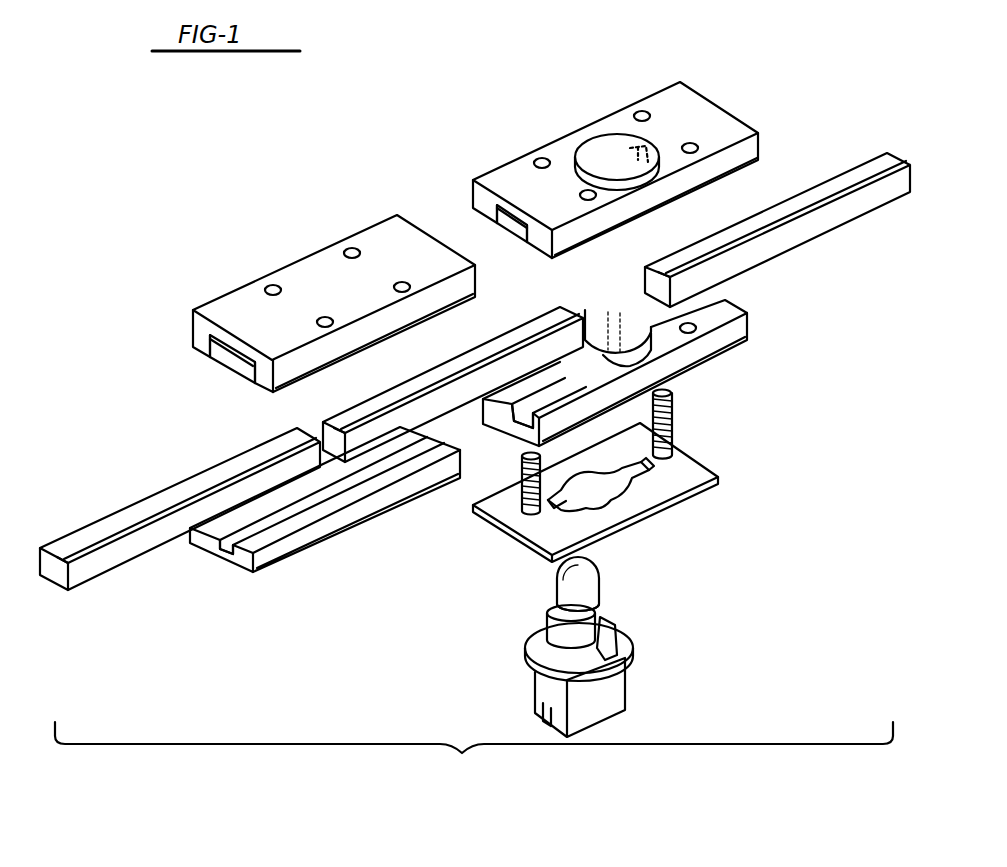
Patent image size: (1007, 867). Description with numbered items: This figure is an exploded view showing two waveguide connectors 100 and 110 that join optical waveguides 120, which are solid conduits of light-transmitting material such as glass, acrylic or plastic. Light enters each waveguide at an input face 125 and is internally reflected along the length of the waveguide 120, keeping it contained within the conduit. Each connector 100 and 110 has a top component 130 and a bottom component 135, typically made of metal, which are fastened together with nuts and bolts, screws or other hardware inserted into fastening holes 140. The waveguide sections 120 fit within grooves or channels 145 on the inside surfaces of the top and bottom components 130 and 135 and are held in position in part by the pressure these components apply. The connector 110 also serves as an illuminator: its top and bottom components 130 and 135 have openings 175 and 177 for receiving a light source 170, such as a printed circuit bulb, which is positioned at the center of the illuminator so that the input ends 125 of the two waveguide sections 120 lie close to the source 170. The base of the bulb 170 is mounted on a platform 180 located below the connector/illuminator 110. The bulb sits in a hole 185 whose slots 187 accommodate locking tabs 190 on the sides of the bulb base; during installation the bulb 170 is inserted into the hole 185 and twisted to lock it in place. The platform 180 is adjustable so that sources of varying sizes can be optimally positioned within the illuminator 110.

The waveguide connector 100 is at (279, 246).
The connector/illuminator 110 is at (523, 120).
The optical waveguide 120 is at (822, 223).
The input face 125 is at (888, 152).
The top component 130 is at (717, 124).
The bottom component 135 is at (710, 348).
The fastening hole 140 is at (547, 160).
The groove or channel 145 is at (512, 226).
The light source 170 is at (633, 650).
The opening 175 is at (618, 165).
The opening 177 is at (648, 355).
The platform 180 is at (697, 473).
The hole 185 is at (607, 497).
The slot 187 is at (548, 512).
The locking tab 190 is at (527, 628).